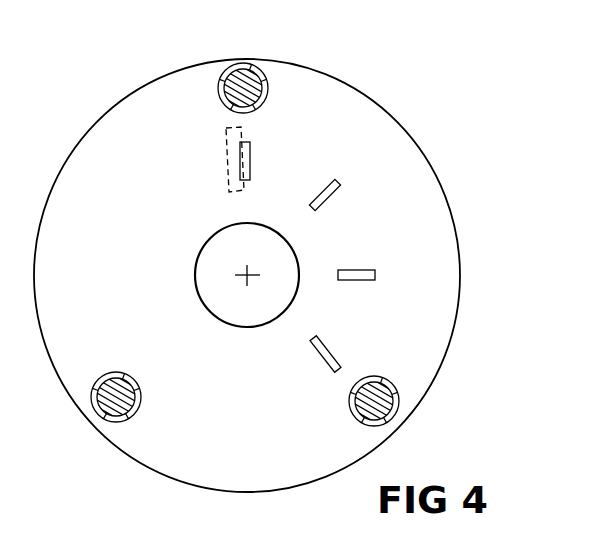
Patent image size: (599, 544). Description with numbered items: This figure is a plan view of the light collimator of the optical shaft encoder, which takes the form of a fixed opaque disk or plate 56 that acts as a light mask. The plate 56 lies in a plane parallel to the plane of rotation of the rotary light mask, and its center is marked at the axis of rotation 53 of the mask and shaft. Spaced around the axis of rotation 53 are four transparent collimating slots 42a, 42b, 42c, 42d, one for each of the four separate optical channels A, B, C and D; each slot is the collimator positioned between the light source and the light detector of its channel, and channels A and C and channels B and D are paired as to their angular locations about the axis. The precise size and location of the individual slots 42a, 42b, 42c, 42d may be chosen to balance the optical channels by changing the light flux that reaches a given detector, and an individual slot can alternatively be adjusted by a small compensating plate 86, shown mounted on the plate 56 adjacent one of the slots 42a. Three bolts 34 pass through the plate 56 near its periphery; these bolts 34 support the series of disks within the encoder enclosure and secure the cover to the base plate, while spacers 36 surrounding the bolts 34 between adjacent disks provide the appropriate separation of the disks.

The bolts 34 is at (238, 82).
The spacers 36 is at (263, 78).
The collimating slot 42a is at (243, 155).
The collimating slot 42b is at (328, 180).
The collimating slot 42c is at (364, 272).
The collimating slot 42d is at (337, 352).
The axis of rotation 53 is at (243, 278).
The plate 56 is at (434, 165).
The compensating plate 86 is at (187, 193).